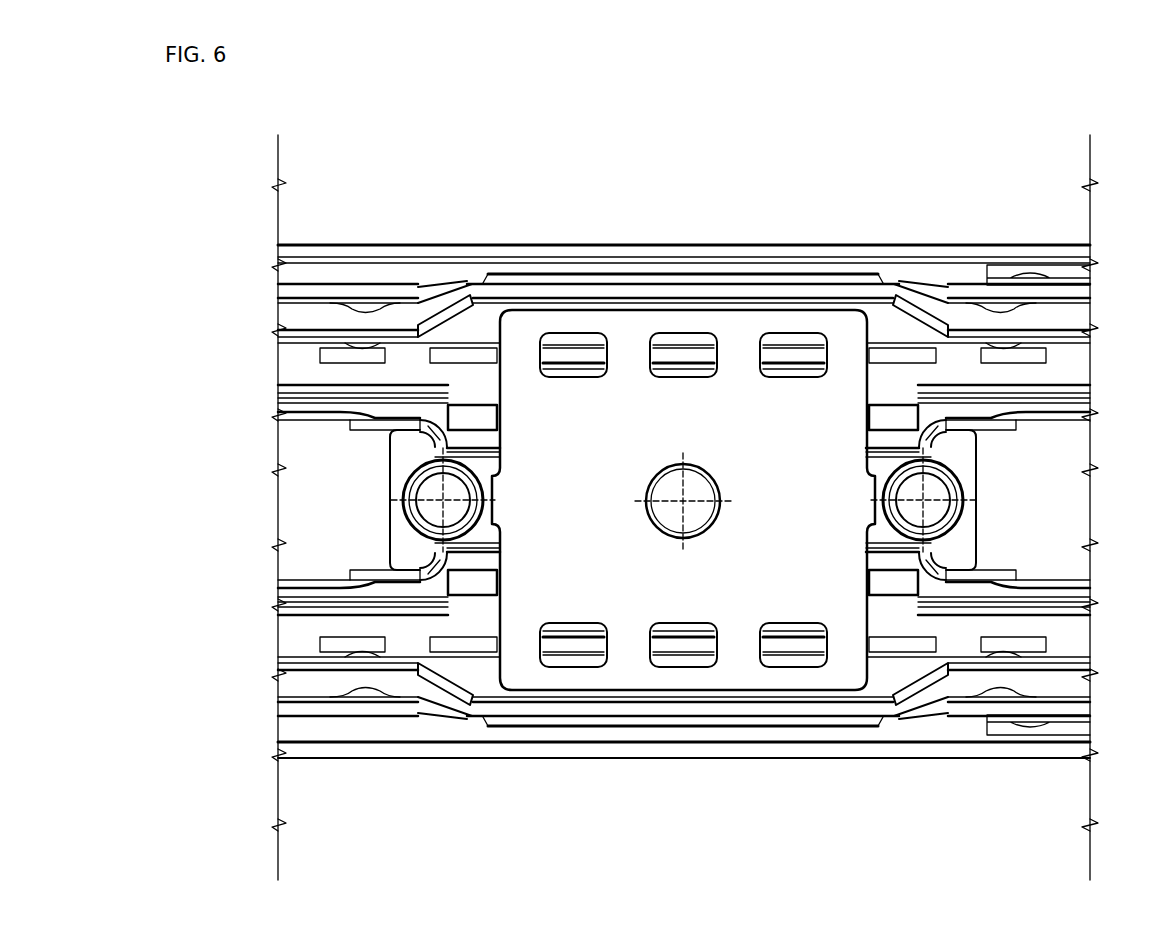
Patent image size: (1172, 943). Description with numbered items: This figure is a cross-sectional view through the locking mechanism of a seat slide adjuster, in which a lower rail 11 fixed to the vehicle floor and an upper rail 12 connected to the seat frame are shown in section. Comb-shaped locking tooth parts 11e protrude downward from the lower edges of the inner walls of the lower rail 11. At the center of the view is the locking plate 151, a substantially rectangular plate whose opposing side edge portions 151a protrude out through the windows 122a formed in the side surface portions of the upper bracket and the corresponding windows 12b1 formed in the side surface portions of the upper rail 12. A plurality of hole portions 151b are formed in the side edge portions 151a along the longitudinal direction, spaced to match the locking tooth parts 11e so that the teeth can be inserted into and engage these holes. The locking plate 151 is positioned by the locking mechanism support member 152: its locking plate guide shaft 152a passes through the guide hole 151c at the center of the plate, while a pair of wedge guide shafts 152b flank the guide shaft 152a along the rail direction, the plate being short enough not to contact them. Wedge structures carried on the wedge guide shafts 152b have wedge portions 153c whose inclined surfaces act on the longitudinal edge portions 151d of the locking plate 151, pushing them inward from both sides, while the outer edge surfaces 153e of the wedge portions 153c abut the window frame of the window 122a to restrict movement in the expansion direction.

The lower rail 11 is at (325, 232).
The locking tooth parts 11e is at (583, 345).
The upper rail 12 is at (270, 691).
The windows 12b1 is at (872, 385).
The windows 122a is at (465, 290).
The locking plate 151 is at (524, 318).
The side edge portions 151a is at (632, 325).
The hole portions 151b is at (575, 357).
The guide hole 151c is at (709, 516).
The longitudinal edge portions 151d is at (487, 648).
The locking mechanism support member 152 is at (989, 486).
The locking plate guide shaft 152a is at (695, 512).
The wedge guide shafts 152b is at (412, 520).
The wedge portions 153c is at (478, 400).
The outer edge surfaces 153e is at (395, 432).